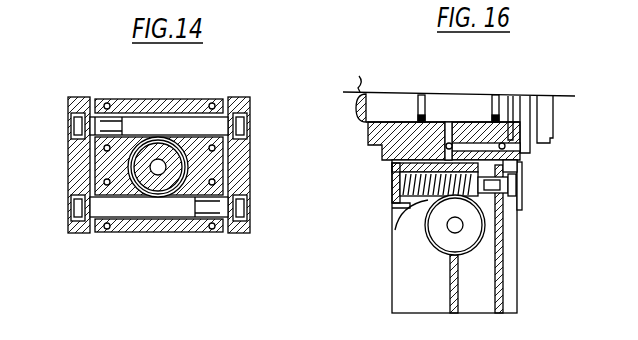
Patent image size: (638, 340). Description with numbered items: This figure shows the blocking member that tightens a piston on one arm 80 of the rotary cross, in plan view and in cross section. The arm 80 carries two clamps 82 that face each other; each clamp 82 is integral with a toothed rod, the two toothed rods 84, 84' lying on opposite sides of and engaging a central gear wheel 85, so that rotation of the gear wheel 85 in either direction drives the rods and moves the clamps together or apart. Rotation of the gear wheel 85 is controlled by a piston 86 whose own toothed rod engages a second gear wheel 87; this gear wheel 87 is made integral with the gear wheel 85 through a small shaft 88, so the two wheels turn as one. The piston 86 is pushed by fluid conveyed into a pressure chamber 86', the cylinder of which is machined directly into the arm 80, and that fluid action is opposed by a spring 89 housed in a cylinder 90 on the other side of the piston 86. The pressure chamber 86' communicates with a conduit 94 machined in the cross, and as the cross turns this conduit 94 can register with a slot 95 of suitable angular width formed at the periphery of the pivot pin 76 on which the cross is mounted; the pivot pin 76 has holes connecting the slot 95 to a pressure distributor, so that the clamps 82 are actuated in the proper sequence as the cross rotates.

In FIG. 16, the pivot pin 76 is at (388, 98).
In FIG. 14, the arm 80 is at (165, 108).
In FIG. 16, the arm 80 is at (398, 273).
In FIG. 14, the clamp 82 is at (83, 224).
In FIG. 14, the toothed rod 84 is at (159, 167).
In FIG. 14, the toothed rod 84' is at (159, 168).
In FIG. 14, the gear wheel 85 is at (163, 192).
In FIG. 16, the piston 86 is at (518, 192).
In FIG. 16, the pressure chamber 86' is at (535, 199).
In FIG. 16, the gear wheel 87 is at (470, 233).
In FIG. 14, the small shaft 88 is at (156, 158).
In FIG. 16, the small shaft 88 is at (455, 230).
In FIG. 16, the spring 89 is at (440, 150).
In FIG. 16, the cylinder 90 is at (395, 231).
In FIG. 16, the conduit 94 is at (505, 164).
In FIG. 16, the slot 95 is at (496, 100).